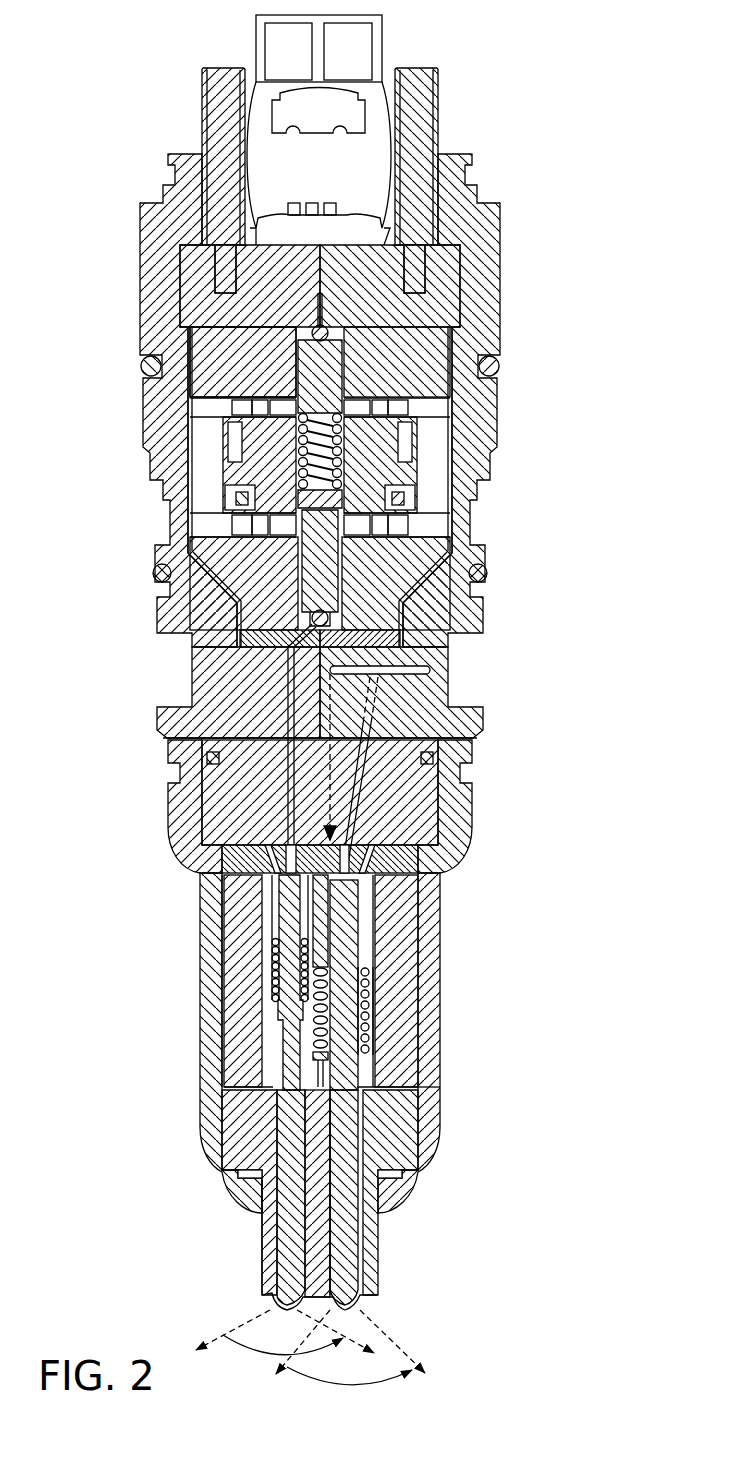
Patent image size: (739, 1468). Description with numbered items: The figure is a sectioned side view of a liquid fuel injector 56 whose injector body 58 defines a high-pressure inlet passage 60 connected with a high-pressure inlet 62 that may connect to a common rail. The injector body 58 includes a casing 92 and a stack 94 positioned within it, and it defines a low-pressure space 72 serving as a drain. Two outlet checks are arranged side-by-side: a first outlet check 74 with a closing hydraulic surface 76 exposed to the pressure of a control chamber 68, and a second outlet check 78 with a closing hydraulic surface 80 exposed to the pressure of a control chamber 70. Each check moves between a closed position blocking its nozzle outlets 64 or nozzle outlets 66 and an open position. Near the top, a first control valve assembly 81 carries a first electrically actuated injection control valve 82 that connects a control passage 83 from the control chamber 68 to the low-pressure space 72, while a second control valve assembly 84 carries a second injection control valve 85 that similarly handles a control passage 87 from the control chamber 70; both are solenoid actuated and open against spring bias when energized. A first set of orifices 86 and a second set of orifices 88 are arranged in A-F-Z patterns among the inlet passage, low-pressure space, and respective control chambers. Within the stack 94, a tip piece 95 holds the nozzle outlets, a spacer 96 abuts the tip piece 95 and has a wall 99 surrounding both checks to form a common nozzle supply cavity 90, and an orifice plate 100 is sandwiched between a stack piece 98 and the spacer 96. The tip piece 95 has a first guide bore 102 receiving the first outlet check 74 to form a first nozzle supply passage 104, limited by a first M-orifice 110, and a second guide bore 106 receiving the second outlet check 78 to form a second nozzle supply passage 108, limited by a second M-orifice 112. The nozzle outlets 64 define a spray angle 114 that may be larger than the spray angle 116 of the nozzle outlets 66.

The fuel injector 56 is at (354, 700).
The injector body 58 is at (503, 331).
The high-pressure inlet passage 60 is at (403, 656).
The high-pressure inlet 62 is at (463, 683).
The nozzle outlets 64 is at (272, 1297).
The nozzle outlets 66 is at (365, 1297).
The control chamber 68 is at (280, 875).
The control chamber 70 is at (410, 907).
The low-pressure space 72 is at (317, 465).
The first outlet check 74 is at (277, 1055).
The closing hydraulic surface 76 is at (267, 903).
The second outlet check 78 is at (347, 1007).
The closing hydraulic surface 80 is at (310, 845).
The first control valve assembly 81 is at (277, 592).
The first electrically actuated injection control valve 82 is at (322, 611).
The control passage 83 is at (290, 678).
The control valve assembly 84 is at (276, 373).
The second electrically actuated injection control valve 85 is at (317, 320).
The first set of orifices 86 is at (266, 840).
The control passage 87 is at (320, 292).
The second set of orifices 88 is at (395, 847).
The common nozzle supply cavity 90 is at (272, 1037).
The casing 92 is at (443, 1043).
The stack 94 is at (427, 1123).
The tip piece 95 is at (240, 1107).
The spacer 96 is at (363, 943).
The stack piece 98 is at (207, 790).
The wall 99 is at (277, 940).
The orifice plate 100 is at (223, 853).
The first guide bore 102 is at (270, 1160).
The first nozzle supply passage 104 is at (263, 1198).
The second guide bore 106 is at (330, 1160).
The second nozzle supply passage 108 is at (327, 1197).
The first M-orifice 110 is at (277, 1193).
The second M-orifice 112 is at (400, 1177).
The spray angle 114 is at (273, 1350).
The spray angle 116 is at (338, 1385).